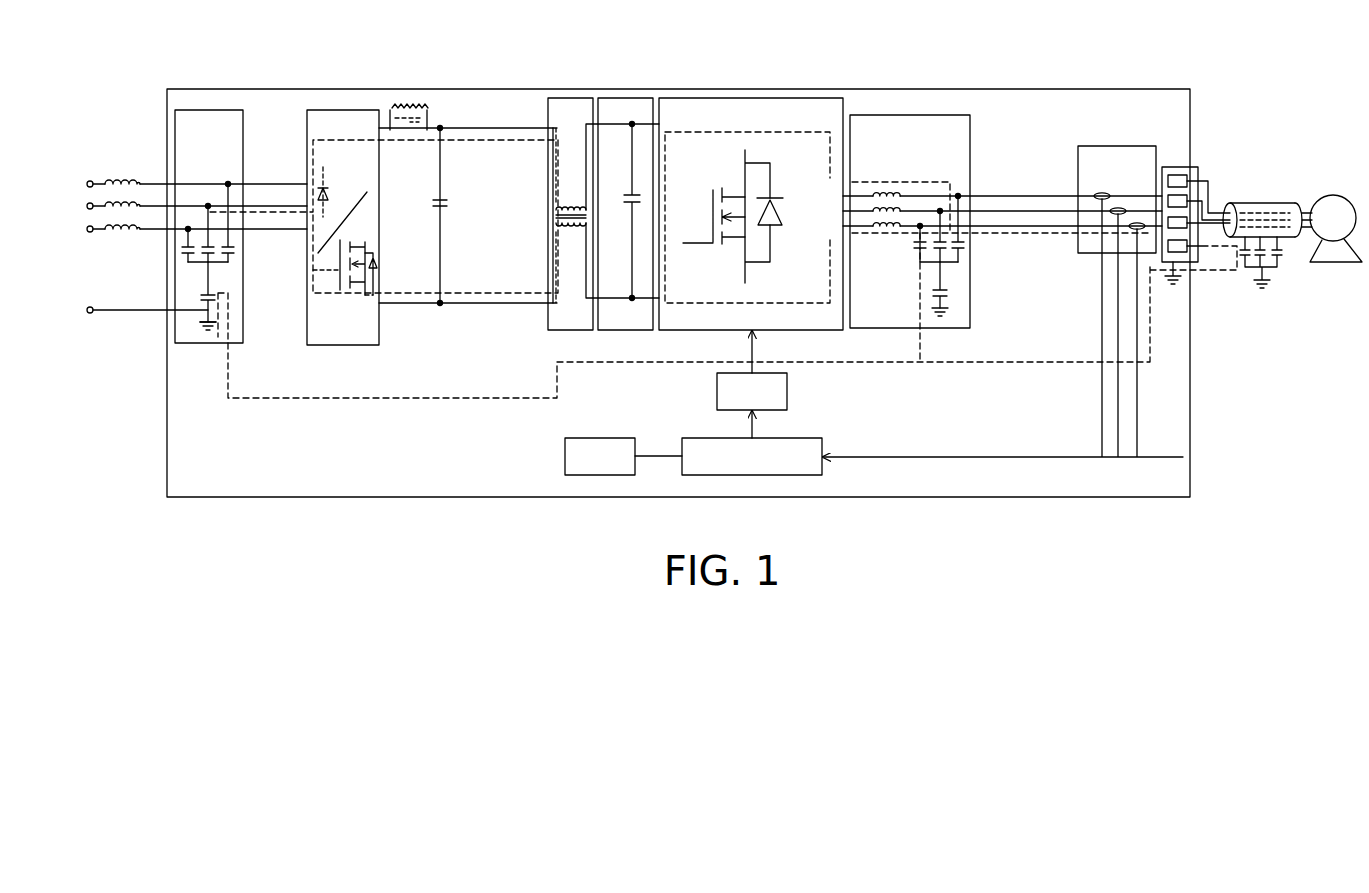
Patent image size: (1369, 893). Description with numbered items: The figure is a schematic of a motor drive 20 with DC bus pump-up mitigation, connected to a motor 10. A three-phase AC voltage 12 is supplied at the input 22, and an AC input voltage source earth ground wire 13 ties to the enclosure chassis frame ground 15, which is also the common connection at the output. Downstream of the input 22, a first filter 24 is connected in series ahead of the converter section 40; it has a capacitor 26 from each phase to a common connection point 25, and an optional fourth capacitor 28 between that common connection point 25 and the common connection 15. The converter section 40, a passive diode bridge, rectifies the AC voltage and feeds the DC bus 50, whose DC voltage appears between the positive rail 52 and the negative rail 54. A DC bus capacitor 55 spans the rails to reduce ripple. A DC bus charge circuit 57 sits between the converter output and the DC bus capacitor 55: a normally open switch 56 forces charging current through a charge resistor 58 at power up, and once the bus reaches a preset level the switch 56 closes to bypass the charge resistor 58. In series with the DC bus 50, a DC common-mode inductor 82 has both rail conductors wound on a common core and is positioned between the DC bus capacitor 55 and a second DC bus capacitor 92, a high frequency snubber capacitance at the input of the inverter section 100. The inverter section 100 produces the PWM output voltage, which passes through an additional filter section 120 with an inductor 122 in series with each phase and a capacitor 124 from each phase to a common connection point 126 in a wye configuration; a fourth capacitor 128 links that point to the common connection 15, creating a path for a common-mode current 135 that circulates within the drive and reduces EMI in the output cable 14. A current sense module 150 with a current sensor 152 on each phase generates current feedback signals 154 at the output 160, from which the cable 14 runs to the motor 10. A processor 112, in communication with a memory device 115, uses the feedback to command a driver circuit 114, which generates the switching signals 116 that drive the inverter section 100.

The motor 10 is at (1336, 228).
The AC voltage 12 is at (103, 177).
The AC input voltage source earth ground wire 13 is at (182, 316).
The cable 14 is at (1262, 188).
The enclosure chassis frame ground 15 is at (199, 333).
The motor drive 20 is at (990, 89).
The input 22 is at (155, 177).
The first filter 24 is at (210, 110).
The common connection point 25 is at (214, 297).
The capacitor 26 is at (208, 263).
The fourth capacitor 28 is at (214, 319).
The converter section 40 is at (342, 110).
The DC bus 50 is at (398, 306).
The positive rail 52 is at (498, 128).
The negative rail 54 is at (485, 305).
The DC bus capacitor 55 is at (449, 206).
The switch 56 is at (398, 134).
The DC bus charge circuit 57 is at (433, 128).
The charge resistor 58 is at (398, 106).
The DC common-mode inductor 82 is at (575, 200).
The second DC bus capacitor 92 is at (627, 186).
The inverter section 100 is at (745, 98).
The processor 112 is at (802, 438).
The driver circuit 114 is at (752, 405).
The memory device 115 is at (623, 456).
The switching signals 116 is at (752, 360).
The additional filter section 120 is at (905, 115).
The inductor 122 is at (888, 222).
The capacitor 124 is at (919, 251).
The common connection point 126 is at (934, 293).
The fourth capacitor 128 is at (950, 307).
The common-mode current 135 is at (475, 402).
The current sense module 150 is at (1078, 148).
The current sensor 152 is at (1137, 222).
The current feedback signal 154 is at (1137, 276).
The output 160 is at (1199, 166).